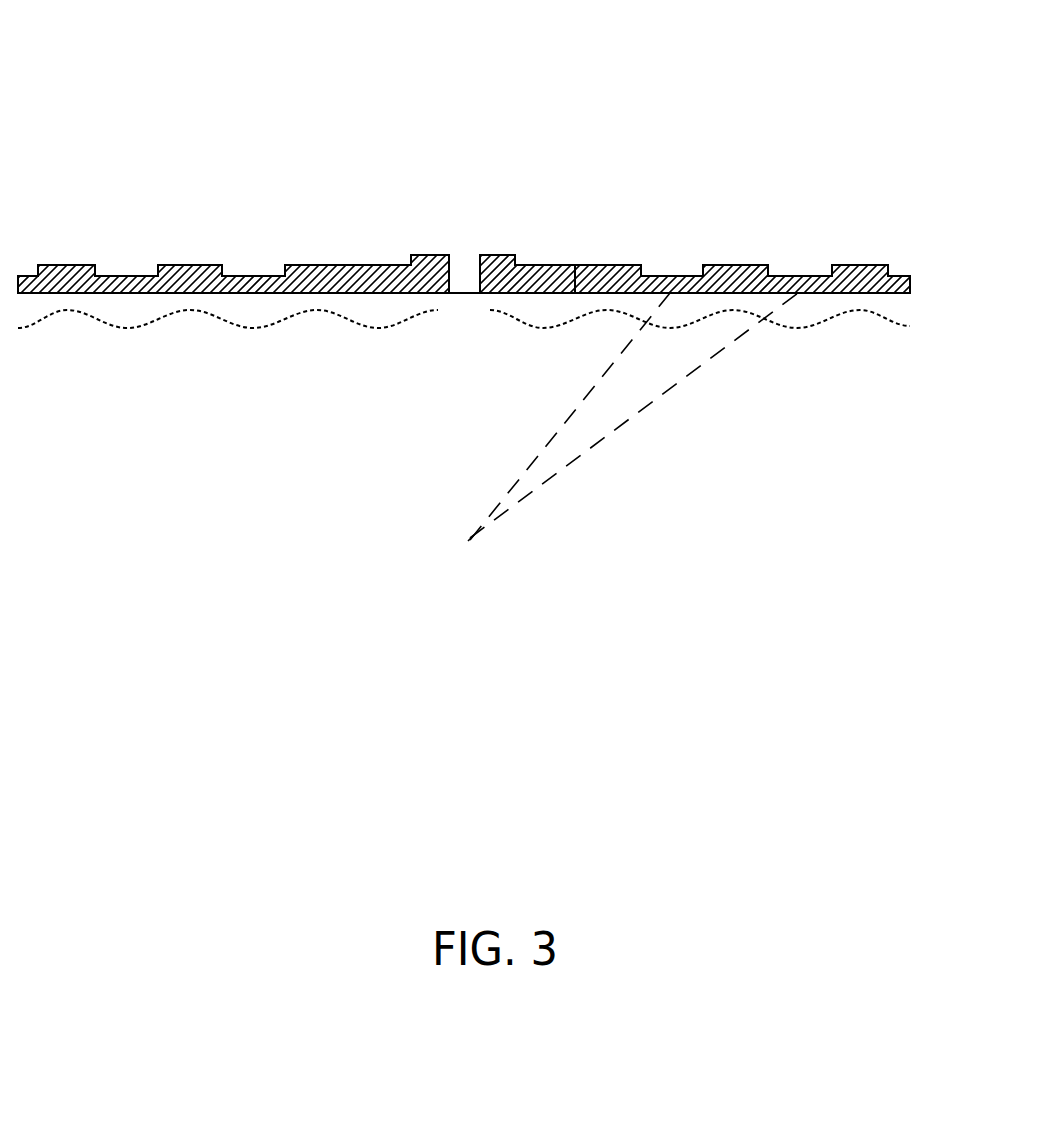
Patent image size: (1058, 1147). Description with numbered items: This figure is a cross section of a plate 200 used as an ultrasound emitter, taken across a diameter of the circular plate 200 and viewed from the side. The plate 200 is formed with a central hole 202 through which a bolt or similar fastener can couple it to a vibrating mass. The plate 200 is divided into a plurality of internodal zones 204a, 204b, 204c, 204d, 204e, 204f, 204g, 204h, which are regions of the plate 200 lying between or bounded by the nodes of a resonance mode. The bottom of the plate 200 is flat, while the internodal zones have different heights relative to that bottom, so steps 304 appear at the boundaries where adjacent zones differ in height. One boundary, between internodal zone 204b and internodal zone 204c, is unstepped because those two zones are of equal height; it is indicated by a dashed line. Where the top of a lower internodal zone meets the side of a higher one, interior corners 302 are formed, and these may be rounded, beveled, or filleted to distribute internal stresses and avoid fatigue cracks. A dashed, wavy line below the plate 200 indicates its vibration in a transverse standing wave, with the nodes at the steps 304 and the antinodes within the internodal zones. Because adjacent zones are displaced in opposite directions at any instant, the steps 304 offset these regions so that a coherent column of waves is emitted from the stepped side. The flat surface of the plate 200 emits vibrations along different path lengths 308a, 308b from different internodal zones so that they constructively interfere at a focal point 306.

The plate 200 is at (182, 66).
The central hole 202 is at (463, 256).
The internodal zone 204a is at (509, 257).
The internodal zone 204b is at (556, 266).
The internodal zone 204c is at (607, 266).
The internodal zone 204d is at (666, 276).
The internodal zone 204e is at (735, 266).
The internodal zone 204f is at (790, 276).
The internodal zone 204g is at (855, 266).
The internodal zone 204h is at (900, 276).
The interior corner 302 is at (157, 274).
The step 304 is at (288, 274).
The focal point 306 is at (468, 538).
The path length 308a is at (552, 438).
The path length 308b is at (602, 440).